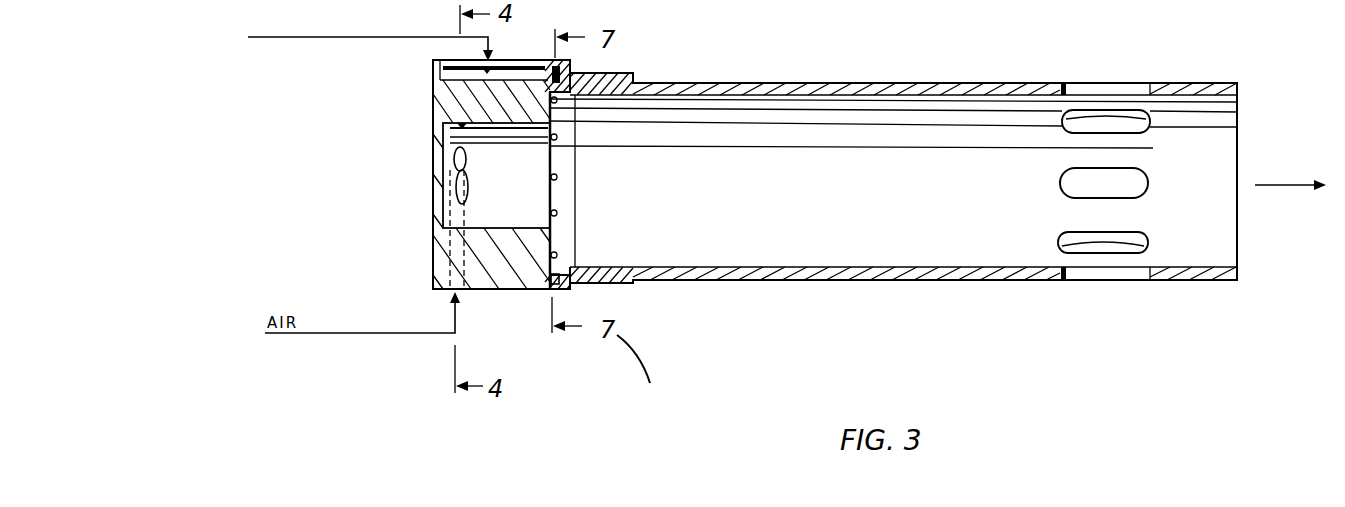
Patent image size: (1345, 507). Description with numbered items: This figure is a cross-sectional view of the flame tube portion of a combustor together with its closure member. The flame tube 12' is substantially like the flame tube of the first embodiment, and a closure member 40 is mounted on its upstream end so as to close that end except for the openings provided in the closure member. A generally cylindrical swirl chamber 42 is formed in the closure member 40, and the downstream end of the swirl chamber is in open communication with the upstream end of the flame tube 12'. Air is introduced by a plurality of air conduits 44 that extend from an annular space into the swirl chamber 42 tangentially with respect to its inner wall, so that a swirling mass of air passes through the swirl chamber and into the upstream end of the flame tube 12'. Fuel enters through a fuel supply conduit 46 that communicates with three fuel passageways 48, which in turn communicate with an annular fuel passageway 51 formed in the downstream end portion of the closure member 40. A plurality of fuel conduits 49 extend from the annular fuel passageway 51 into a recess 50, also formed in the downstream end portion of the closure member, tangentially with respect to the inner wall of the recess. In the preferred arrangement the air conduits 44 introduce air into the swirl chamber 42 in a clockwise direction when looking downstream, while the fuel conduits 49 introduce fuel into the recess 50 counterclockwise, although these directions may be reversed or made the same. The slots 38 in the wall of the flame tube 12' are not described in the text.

The flame tube 12' is at (903, 191).
The slots 38 is at (1149, 184).
The closure member 40 is at (527, 269).
The swirl chamber 42 is at (539, 222).
The air conduits 44 is at (469, 186).
The fuel supply conduit 46 is at (348, 38).
The fuel passageways 48 is at (433, 100).
The fuel conduits 49 is at (558, 177).
The recess 50 is at (567, 132).
The annular fuel passageway 51 is at (556, 270).